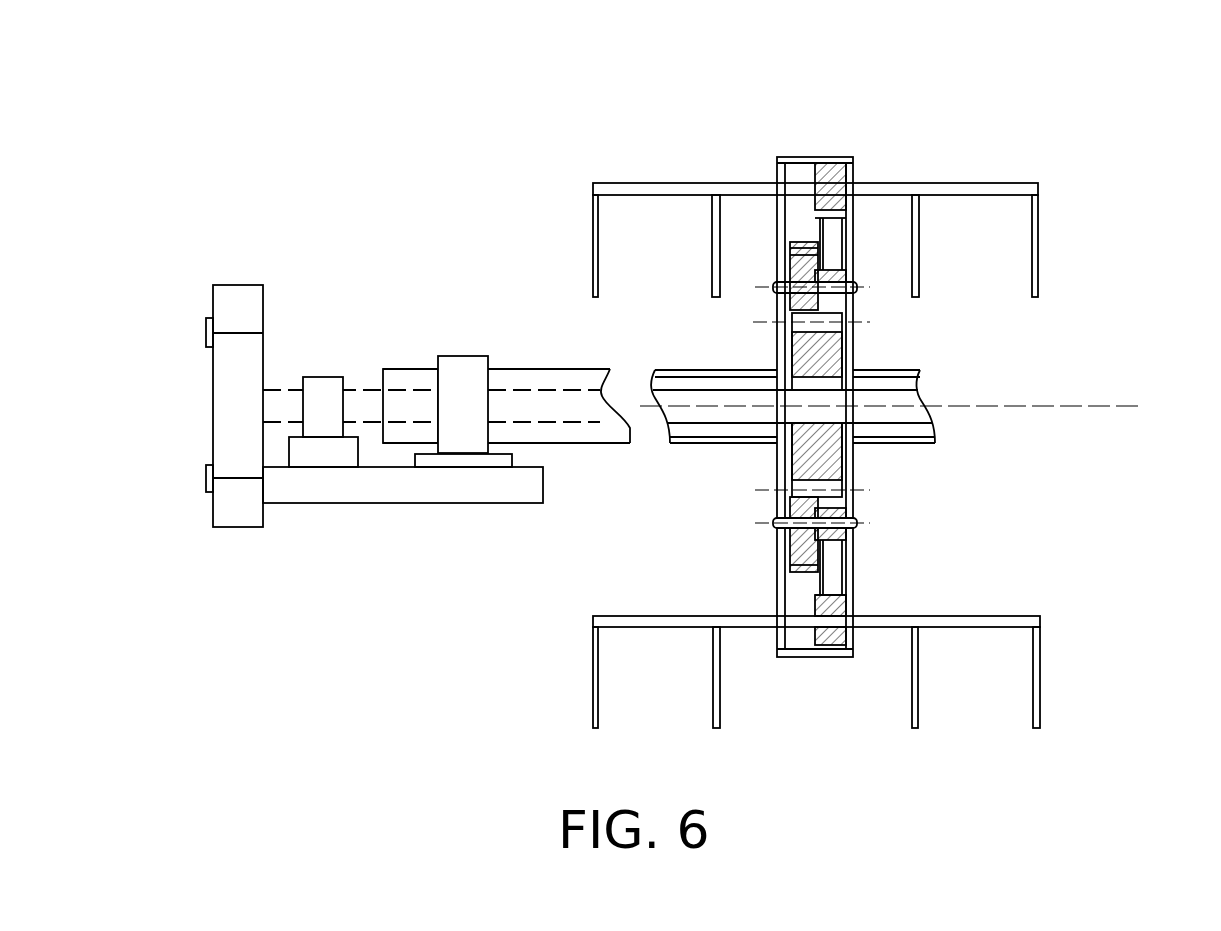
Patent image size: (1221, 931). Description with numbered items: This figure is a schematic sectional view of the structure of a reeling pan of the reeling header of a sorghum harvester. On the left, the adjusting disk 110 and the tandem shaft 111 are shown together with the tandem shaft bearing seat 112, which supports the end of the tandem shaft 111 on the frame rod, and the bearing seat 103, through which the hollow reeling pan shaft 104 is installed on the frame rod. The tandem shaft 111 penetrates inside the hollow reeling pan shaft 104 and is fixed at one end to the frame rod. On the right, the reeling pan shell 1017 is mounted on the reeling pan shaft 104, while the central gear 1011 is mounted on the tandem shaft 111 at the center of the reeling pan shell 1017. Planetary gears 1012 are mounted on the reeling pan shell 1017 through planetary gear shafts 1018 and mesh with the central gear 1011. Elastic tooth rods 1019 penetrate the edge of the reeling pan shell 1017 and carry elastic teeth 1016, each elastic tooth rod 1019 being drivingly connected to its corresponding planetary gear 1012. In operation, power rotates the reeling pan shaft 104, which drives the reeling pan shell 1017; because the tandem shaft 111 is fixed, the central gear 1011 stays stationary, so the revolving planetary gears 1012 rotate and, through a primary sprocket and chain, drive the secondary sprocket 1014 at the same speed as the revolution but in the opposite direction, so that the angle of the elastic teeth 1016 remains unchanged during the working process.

The bearing seat 103 is at (415, 489).
The reeling pan shaft 104 is at (446, 301).
The adjusting disk 110 is at (206, 349).
The tandem shaft 111 is at (318, 304).
The tandem shaft bearing seat 112 is at (357, 530).
The central gear 1011 is at (917, 435).
The planetary gear 1012 is at (732, 546).
The secondary sprocket 1014 is at (756, 352).
The elastic teeth 1016 is at (893, 390).
The reeling pan shell 1017 is at (831, 248).
The planetary gear shaft 1018 is at (916, 324).
The elastic tooth rod 1019 is at (841, 171).